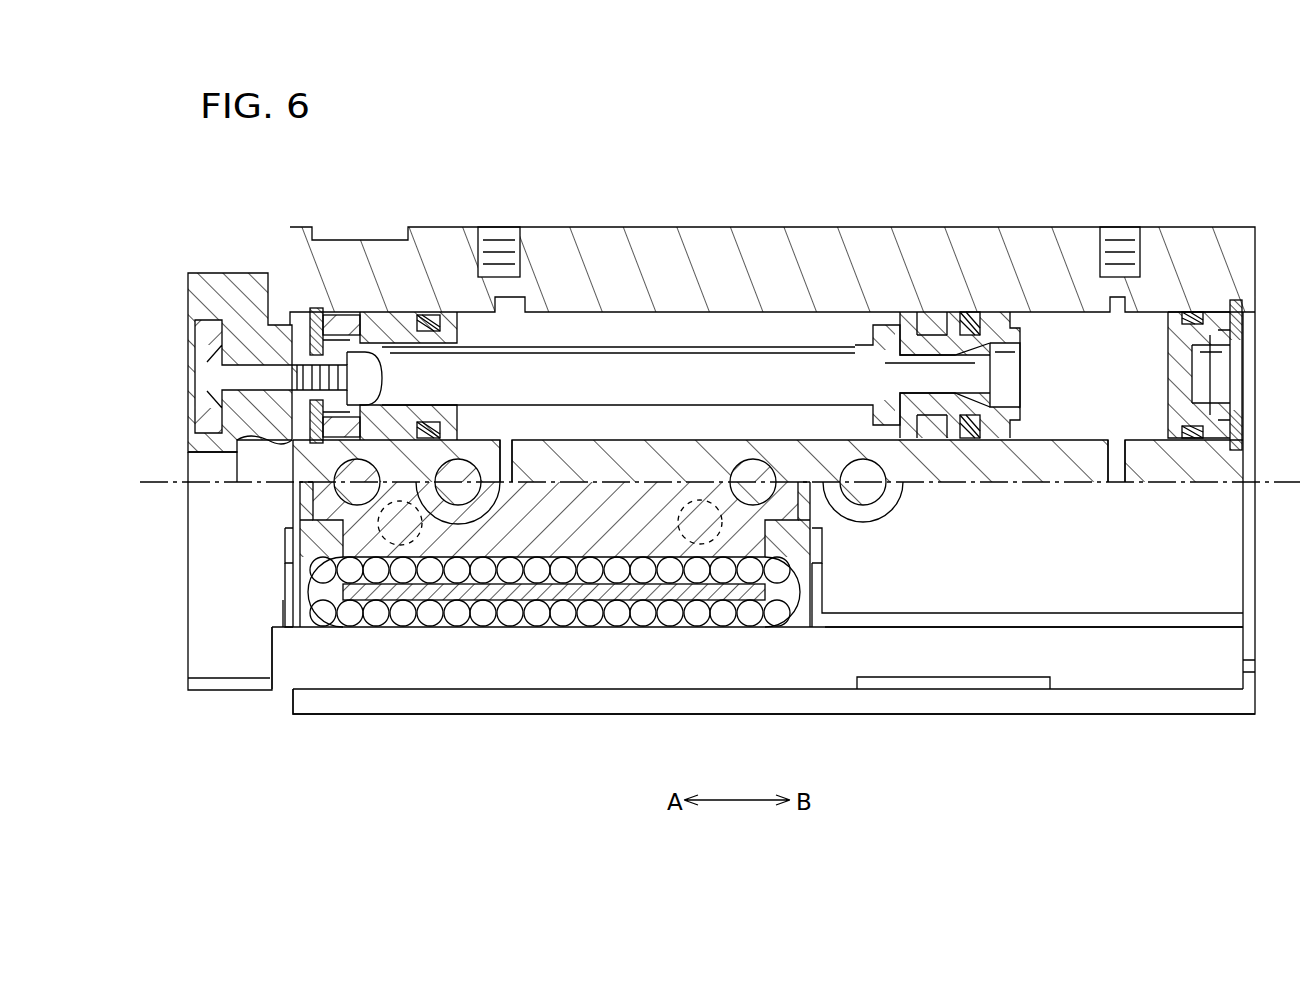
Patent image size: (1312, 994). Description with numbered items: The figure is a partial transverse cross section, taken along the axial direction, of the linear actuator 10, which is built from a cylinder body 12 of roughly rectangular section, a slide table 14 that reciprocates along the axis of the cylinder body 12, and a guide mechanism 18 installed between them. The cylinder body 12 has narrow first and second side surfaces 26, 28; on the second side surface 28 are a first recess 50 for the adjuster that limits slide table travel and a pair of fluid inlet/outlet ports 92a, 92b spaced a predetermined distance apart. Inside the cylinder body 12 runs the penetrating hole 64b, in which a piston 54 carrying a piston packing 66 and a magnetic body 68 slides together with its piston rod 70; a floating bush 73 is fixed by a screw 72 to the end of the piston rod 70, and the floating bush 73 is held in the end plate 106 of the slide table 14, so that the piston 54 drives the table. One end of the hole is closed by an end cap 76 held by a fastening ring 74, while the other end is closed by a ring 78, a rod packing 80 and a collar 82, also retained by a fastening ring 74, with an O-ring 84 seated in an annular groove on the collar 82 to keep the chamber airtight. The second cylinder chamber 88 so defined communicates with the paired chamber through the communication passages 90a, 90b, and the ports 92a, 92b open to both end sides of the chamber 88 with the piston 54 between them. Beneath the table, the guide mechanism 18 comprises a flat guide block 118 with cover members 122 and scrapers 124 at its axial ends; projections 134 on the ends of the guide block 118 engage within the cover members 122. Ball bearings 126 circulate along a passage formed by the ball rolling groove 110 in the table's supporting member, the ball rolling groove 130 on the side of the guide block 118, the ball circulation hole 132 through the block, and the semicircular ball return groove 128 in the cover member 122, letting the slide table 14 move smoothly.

The linear actuator 10 is at (1256, 143).
The cylinder body 12 is at (1233, 219).
The slide table 14 is at (180, 574).
The guide mechanism 18 is at (551, 660).
The first side surface 26 is at (1110, 716).
The second side surface 28 is at (856, 215).
The first recess 50 is at (391, 240).
The piston 54 is at (1034, 363).
The penetrating hole 64b is at (760, 325).
The piston packing 66 is at (962, 312).
The magnetic body 68 is at (932, 312).
The piston rod 70 is at (672, 380).
The screw 72 is at (210, 372).
The floating bush 73 is at (200, 325).
The fastening ring 74 is at (315, 308).
The end cap 76 is at (1222, 415).
The ring 78 is at (200, 446).
The rod packing 80 is at (340, 318).
The collar 82 is at (455, 312).
The O-ring 84 is at (428, 316).
The second cylinder chamber 88 is at (1046, 330).
The communication passage 90a is at (1117, 440).
The communication passage 90b is at (503, 470).
The fluid inlet/outlet port 92a is at (1110, 260).
The fluid inlet/outlet port 92b is at (498, 245).
The end plate 106 is at (238, 280).
The ball rolling groove 110 is at (430, 620).
The guide block 118 is at (680, 554).
The cover member 122 is at (297, 546).
The scraper 124 is at (300, 613).
The ball bearing 126 is at (668, 608).
The ball return groove 128 is at (322, 614).
The ball rolling groove 130 is at (598, 584).
The ball circulation hole 132 is at (506, 582).
The projection 134 is at (312, 490).